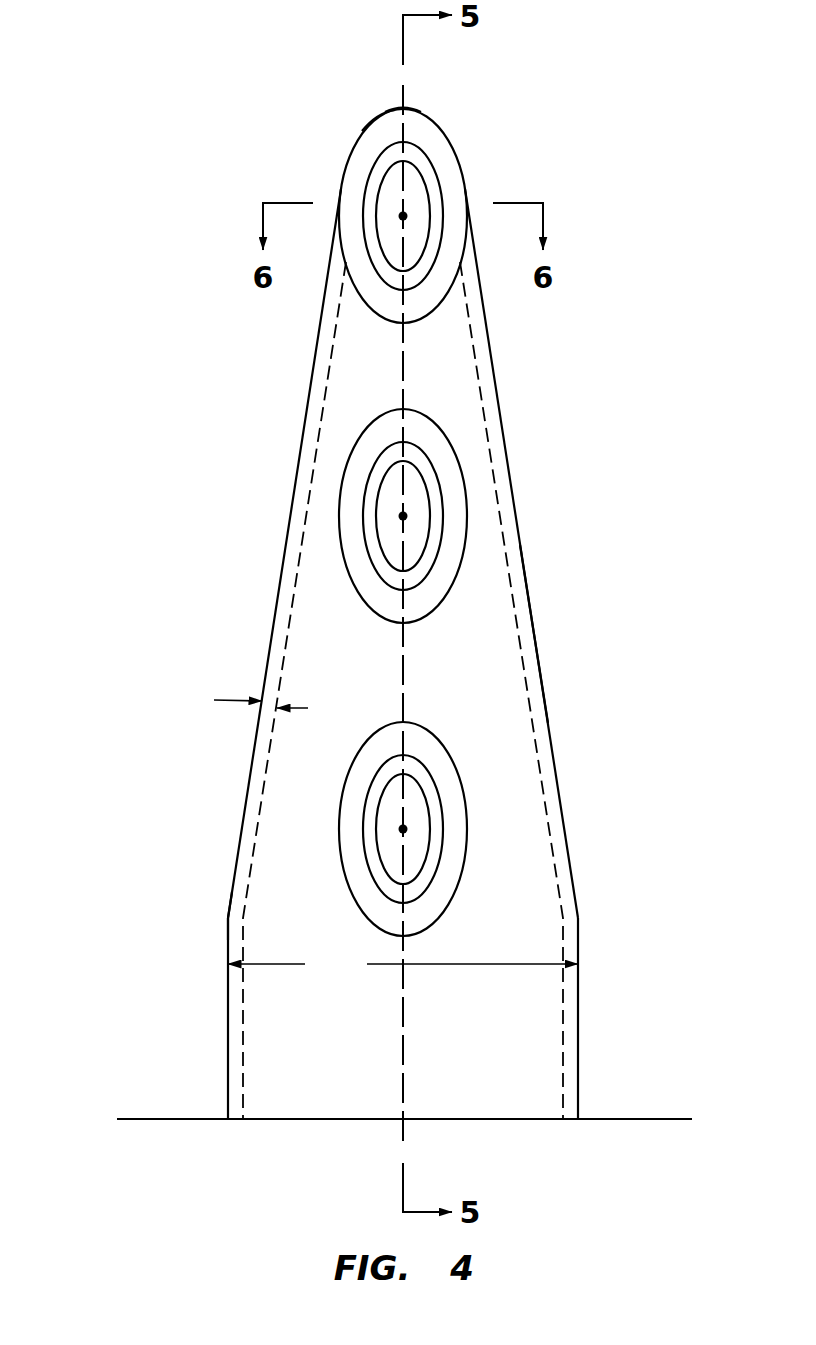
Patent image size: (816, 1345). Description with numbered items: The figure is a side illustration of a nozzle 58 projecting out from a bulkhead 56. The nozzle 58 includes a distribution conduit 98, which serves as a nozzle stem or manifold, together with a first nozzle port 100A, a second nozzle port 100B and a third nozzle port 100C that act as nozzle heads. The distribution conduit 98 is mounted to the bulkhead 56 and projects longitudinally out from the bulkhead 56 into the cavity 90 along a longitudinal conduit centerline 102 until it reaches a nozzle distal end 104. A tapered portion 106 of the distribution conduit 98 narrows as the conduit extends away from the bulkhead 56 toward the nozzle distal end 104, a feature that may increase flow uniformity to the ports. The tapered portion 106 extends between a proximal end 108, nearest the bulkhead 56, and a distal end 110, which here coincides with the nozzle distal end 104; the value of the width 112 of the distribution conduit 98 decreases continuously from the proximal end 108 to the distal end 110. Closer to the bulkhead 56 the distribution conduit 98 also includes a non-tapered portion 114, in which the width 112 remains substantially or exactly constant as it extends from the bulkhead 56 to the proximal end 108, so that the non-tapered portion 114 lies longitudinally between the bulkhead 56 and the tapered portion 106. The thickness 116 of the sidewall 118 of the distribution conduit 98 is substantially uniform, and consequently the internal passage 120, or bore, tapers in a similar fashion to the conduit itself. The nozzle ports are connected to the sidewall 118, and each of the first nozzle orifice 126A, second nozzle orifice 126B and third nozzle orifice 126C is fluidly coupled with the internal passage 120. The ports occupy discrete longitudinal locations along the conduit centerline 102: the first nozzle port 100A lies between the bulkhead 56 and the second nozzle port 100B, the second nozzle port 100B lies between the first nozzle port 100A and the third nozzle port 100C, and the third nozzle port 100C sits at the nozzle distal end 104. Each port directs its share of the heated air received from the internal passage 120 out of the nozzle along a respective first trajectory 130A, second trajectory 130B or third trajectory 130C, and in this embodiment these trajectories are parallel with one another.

The bulkhead 56 is at (647, 1118).
The nozzle 58 is at (621, 78).
The cavity 90 is at (178, 376).
The distribution conduit 98 is at (535, 638).
The first nozzle port 100A is at (467, 812).
The second nozzle port 100B is at (468, 487).
The third nozzle port 100C is at (456, 153).
The conduit centerline 102 is at (403, 1045).
The nozzle distal end 104 is at (410, 110).
The tapered portion 106 is at (282, 563).
The proximal end 108 is at (228, 918).
The distal end 110 is at (377, 117).
The width 112 is at (403, 964).
The non-tapered portion 114 is at (210, 1008).
The thickness 116 is at (220, 700).
The sidewall 118 is at (548, 723).
The internal passage 120 is at (525, 871).
The first nozzle orifice 126A is at (418, 808).
The second nozzle orifice 126B is at (418, 530).
The third nozzle orifice 126C is at (417, 202).
The first trajectory 130A is at (403, 829).
The second trajectory 130B is at (403, 516).
The third trajectory 130C is at (403, 216).